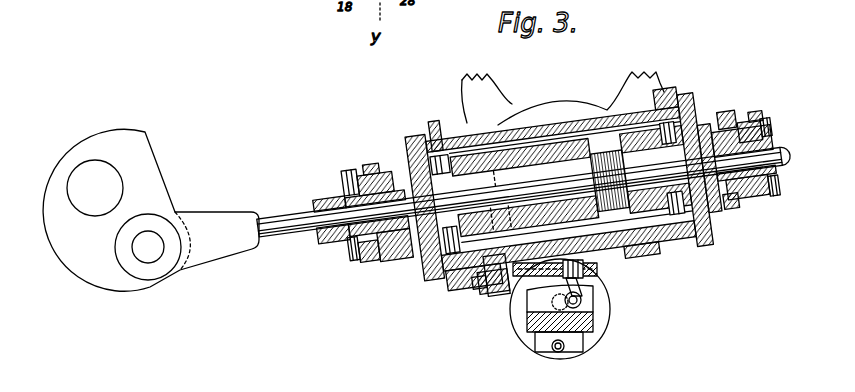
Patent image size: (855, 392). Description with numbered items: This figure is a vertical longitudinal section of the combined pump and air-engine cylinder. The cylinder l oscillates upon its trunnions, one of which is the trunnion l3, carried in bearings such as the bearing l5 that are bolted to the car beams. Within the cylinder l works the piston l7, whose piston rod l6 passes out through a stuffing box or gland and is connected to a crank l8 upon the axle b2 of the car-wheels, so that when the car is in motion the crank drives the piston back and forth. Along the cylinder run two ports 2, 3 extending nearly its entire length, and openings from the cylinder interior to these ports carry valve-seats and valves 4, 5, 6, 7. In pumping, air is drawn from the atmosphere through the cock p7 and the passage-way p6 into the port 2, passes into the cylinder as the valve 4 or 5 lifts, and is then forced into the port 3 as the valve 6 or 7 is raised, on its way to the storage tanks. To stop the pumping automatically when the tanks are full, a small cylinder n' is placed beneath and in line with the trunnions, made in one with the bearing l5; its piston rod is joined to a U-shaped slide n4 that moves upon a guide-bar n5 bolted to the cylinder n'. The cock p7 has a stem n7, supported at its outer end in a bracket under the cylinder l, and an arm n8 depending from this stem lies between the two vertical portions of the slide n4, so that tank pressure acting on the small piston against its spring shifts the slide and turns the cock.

The cylinder l is at (478, 150).
The trunnion l3 is at (586, 127).
The bearing l5 is at (557, 128).
The piston rod l6 is at (276, 238).
The piston l7 is at (642, 245).
The crank l8 is at (151, 210).
The axle b2 is at (95, 188).
The port 2 is at (513, 242).
The port 3 is at (539, 143).
The valve 4 is at (485, 232).
The valve 5 is at (668, 197).
The valve 6 is at (662, 149).
The valve 7 is at (450, 188).
The cylinder n' is at (568, 310).
The U-shaped slide n4 is at (527, 322).
The guide-bar n5 is at (545, 338).
The stem n7 is at (595, 268).
The arm n8 is at (582, 301).
The passage-way p6 is at (500, 290).
The cock p7 is at (493, 280).